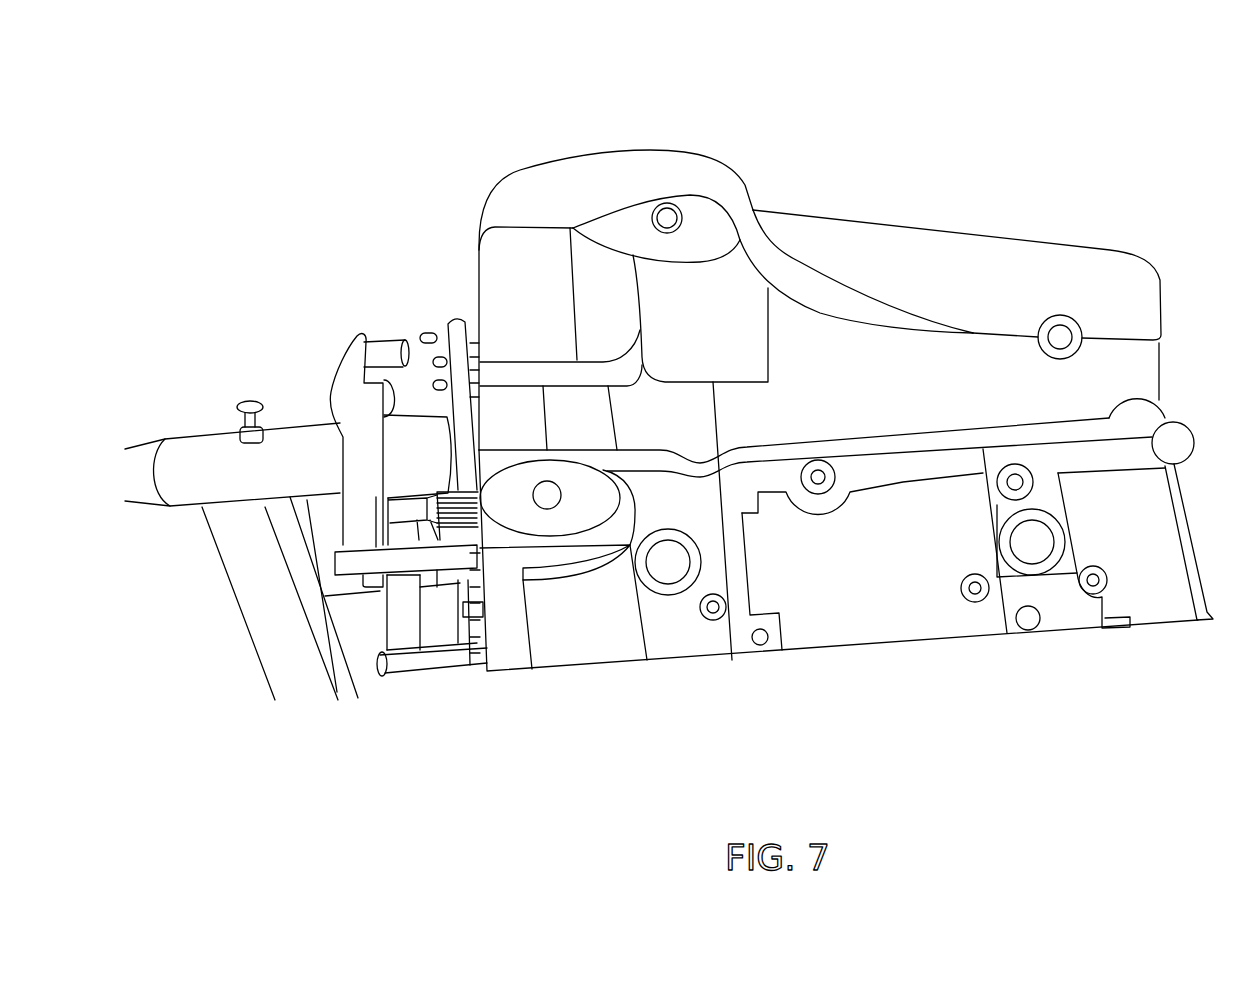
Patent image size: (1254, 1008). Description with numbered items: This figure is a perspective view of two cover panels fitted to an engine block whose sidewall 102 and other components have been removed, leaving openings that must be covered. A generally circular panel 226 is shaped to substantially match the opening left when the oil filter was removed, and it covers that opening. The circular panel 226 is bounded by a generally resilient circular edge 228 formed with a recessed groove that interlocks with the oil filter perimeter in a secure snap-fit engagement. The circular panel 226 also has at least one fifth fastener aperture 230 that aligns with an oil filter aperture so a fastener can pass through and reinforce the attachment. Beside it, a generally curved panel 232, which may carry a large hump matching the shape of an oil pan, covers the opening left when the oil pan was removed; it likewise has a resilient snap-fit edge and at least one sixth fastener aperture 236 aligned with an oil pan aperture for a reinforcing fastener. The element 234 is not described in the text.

The sidewall 102 is at (871, 577).
The circular panel 226 is at (605, 517).
The circular edge 228 is at (588, 528).
The fifth fastener aperture 230 is at (548, 509).
The curved panel 232 is at (591, 207).
The guide rail 234 is at (897, 453).
The sixth fastener aperture 236 is at (664, 203).